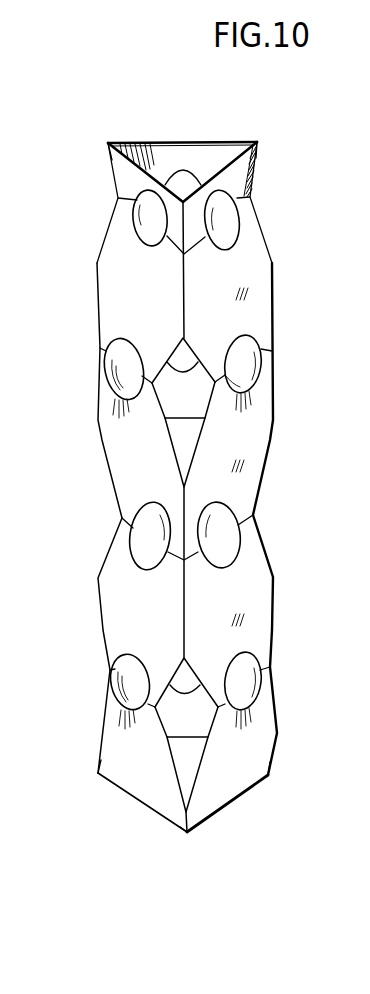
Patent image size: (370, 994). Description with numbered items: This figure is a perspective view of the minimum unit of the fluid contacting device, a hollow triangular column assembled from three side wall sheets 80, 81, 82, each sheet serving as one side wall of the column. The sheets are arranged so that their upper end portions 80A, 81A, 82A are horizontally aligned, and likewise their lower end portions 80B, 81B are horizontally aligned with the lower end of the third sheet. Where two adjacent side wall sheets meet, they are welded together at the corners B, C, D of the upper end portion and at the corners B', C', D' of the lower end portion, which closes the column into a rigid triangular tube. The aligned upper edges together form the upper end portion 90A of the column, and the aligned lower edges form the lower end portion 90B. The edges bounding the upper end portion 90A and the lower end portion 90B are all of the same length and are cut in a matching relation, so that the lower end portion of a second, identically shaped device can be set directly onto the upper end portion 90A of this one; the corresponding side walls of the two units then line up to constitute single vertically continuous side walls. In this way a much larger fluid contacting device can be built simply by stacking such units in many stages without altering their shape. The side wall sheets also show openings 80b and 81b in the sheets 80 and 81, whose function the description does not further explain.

The upper end portion 90A is at (260, 125).
The lower end portion 90B is at (254, 850).
The end portion of side wall sheet 82 82A is at (163, 141).
The side wall sheet 82 is at (195, 398).
The side wall sheet 80 is at (115, 615).
The side wall sheet 81 is at (253, 608).
The end portion of side wall sheet 80 80A is at (116, 165).
The end portion of side wall sheet 81 81A is at (228, 169).
The end portion of side wall sheet 80 80B is at (145, 803).
The end portion of side wall sheet 81 81B is at (243, 795).
The apertures in first side wall 80b is at (125, 695).
The apertures in second side wall 81b is at (250, 363).
The corner B is at (148, 221).
The corner C is at (281, 146).
The corner D is at (82, 145).
The corner B' is at (193, 856).
The corner C' is at (293, 781).
The corner D' is at (81, 785).